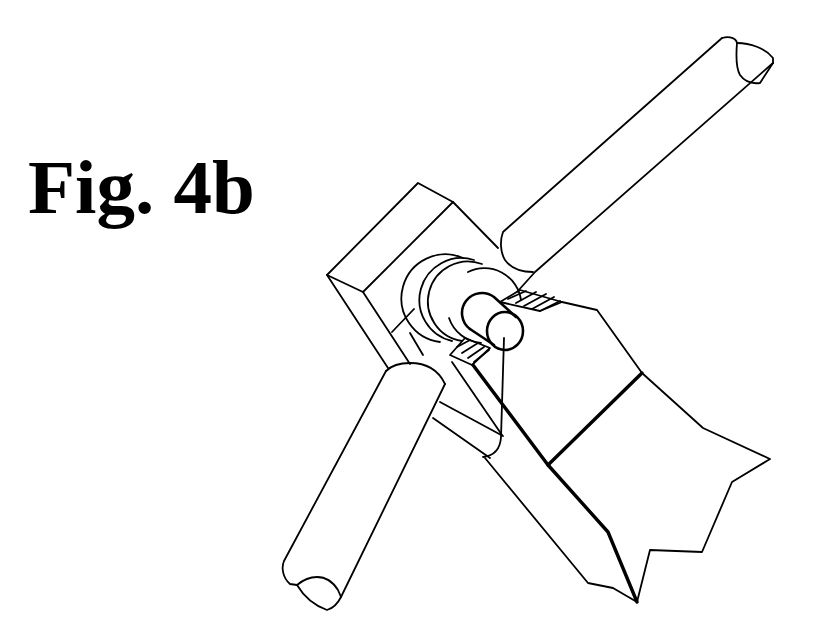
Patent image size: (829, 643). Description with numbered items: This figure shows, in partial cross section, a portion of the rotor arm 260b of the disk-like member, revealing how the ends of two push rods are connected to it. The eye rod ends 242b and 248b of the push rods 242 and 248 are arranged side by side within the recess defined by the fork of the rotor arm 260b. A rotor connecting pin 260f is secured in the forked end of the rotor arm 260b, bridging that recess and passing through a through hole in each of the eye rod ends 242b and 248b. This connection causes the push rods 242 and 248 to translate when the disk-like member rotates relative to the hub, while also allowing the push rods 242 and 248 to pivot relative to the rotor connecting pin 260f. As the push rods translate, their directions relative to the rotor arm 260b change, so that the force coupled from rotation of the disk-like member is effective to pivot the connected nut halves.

The push rod 242 is at (588, 203).
The eye rod end 242b is at (463, 292).
The push rod 248 is at (315, 542).
The eye rod end 248b is at (427, 293).
The rotor arm 260b is at (428, 203).
The rotor connecting pin 260f is at (481, 459).